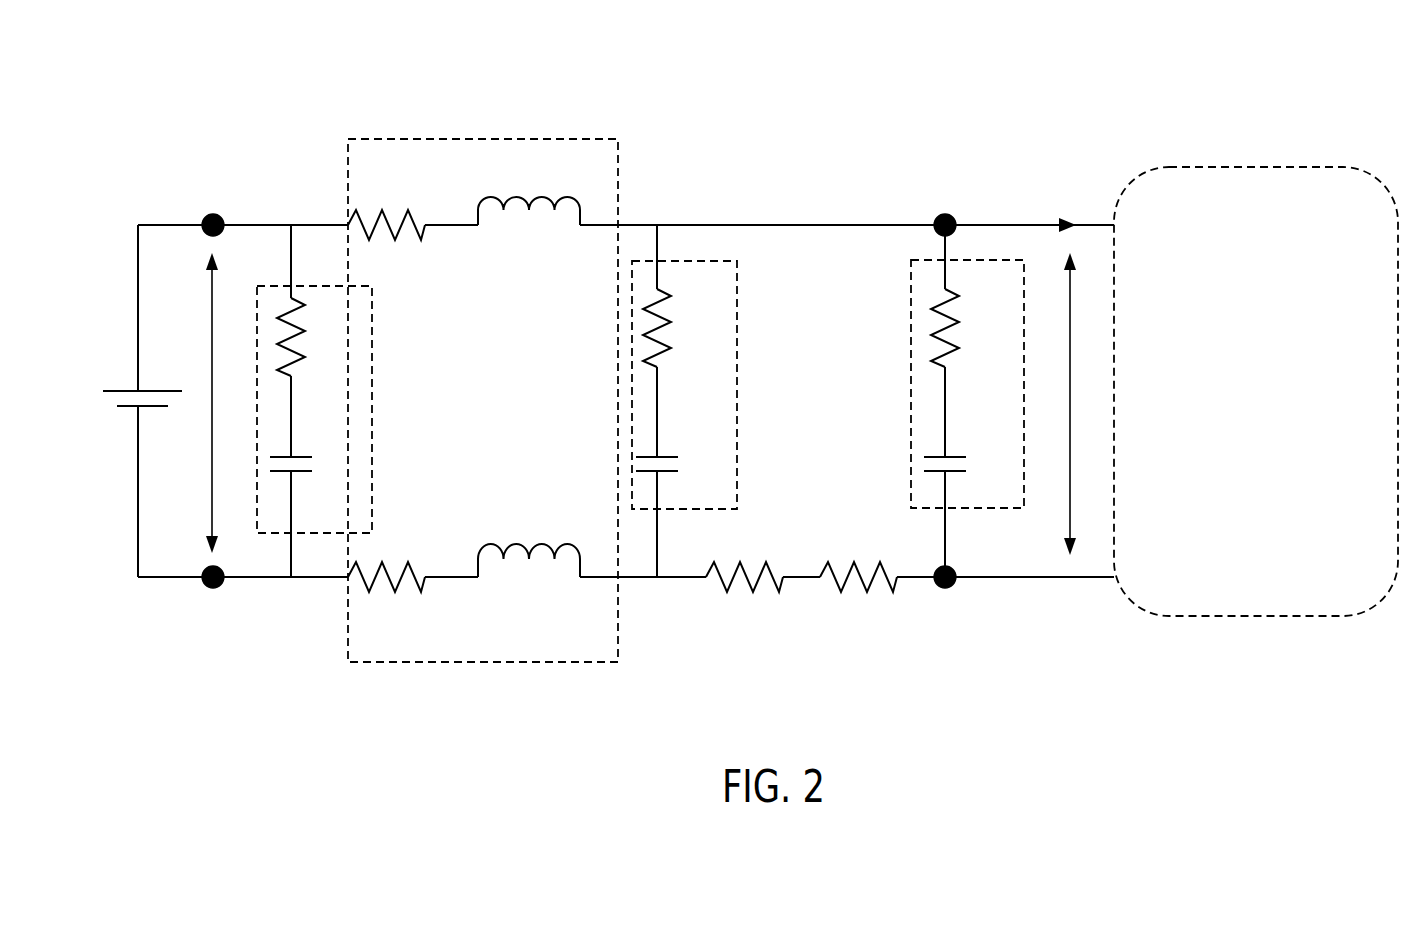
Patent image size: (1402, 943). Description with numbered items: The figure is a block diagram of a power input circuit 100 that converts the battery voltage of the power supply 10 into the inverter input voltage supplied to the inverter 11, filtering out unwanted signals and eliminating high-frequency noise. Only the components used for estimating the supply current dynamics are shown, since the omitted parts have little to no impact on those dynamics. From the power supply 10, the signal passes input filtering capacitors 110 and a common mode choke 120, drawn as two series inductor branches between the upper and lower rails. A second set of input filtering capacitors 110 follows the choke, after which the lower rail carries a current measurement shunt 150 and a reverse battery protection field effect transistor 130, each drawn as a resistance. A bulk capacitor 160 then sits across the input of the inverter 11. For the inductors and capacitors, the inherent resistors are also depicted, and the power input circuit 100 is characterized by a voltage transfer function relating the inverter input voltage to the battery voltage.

The power input circuit 100 is at (283, 140).
The power supply 10 is at (118, 403).
The inverter 11 is at (1122, 192).
The input filtering capacitors 110 is at (373, 394).
The common mode choke 120 is at (620, 172).
The reverse battery protection field effect transistor 130 is at (860, 634).
The current measurement shunt 150 is at (746, 634).
The bulk capacitor 160 is at (1003, 510).